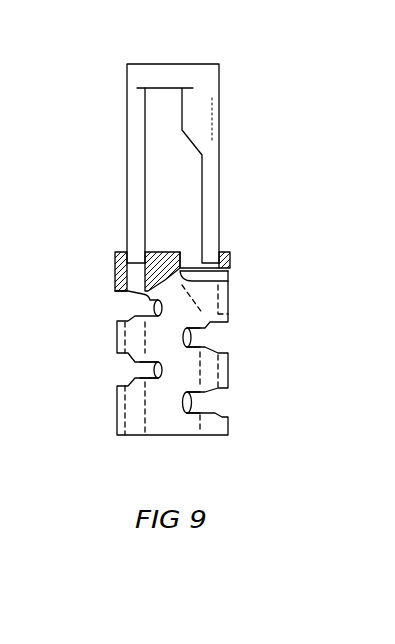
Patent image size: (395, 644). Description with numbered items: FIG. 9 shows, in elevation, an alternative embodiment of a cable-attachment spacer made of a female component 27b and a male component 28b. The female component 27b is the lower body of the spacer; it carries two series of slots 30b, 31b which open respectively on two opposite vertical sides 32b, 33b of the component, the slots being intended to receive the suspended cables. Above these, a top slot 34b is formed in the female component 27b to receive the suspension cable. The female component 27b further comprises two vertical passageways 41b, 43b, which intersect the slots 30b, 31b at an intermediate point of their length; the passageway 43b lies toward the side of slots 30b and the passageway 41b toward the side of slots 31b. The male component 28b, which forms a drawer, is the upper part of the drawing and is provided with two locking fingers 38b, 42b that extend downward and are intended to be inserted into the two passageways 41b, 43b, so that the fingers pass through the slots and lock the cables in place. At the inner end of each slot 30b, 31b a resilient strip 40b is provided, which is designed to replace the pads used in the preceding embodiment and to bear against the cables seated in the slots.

The male component 28b is at (163, 64).
The locking finger 42b is at (131, 190).
The locking finger 38b is at (214, 180).
The female component 27b is at (165, 250).
The vertical passageway 43b is at (115, 278).
The top slot 34b is at (200, 278).
The slots 30b is at (147, 314).
The vertical passageway 41b is at (228, 314).
The resilient strip 40b is at (147, 369).
The slots 31b is at (199, 329).
The vertical side 32b is at (117, 417).
The vertical side 33b is at (229, 426).